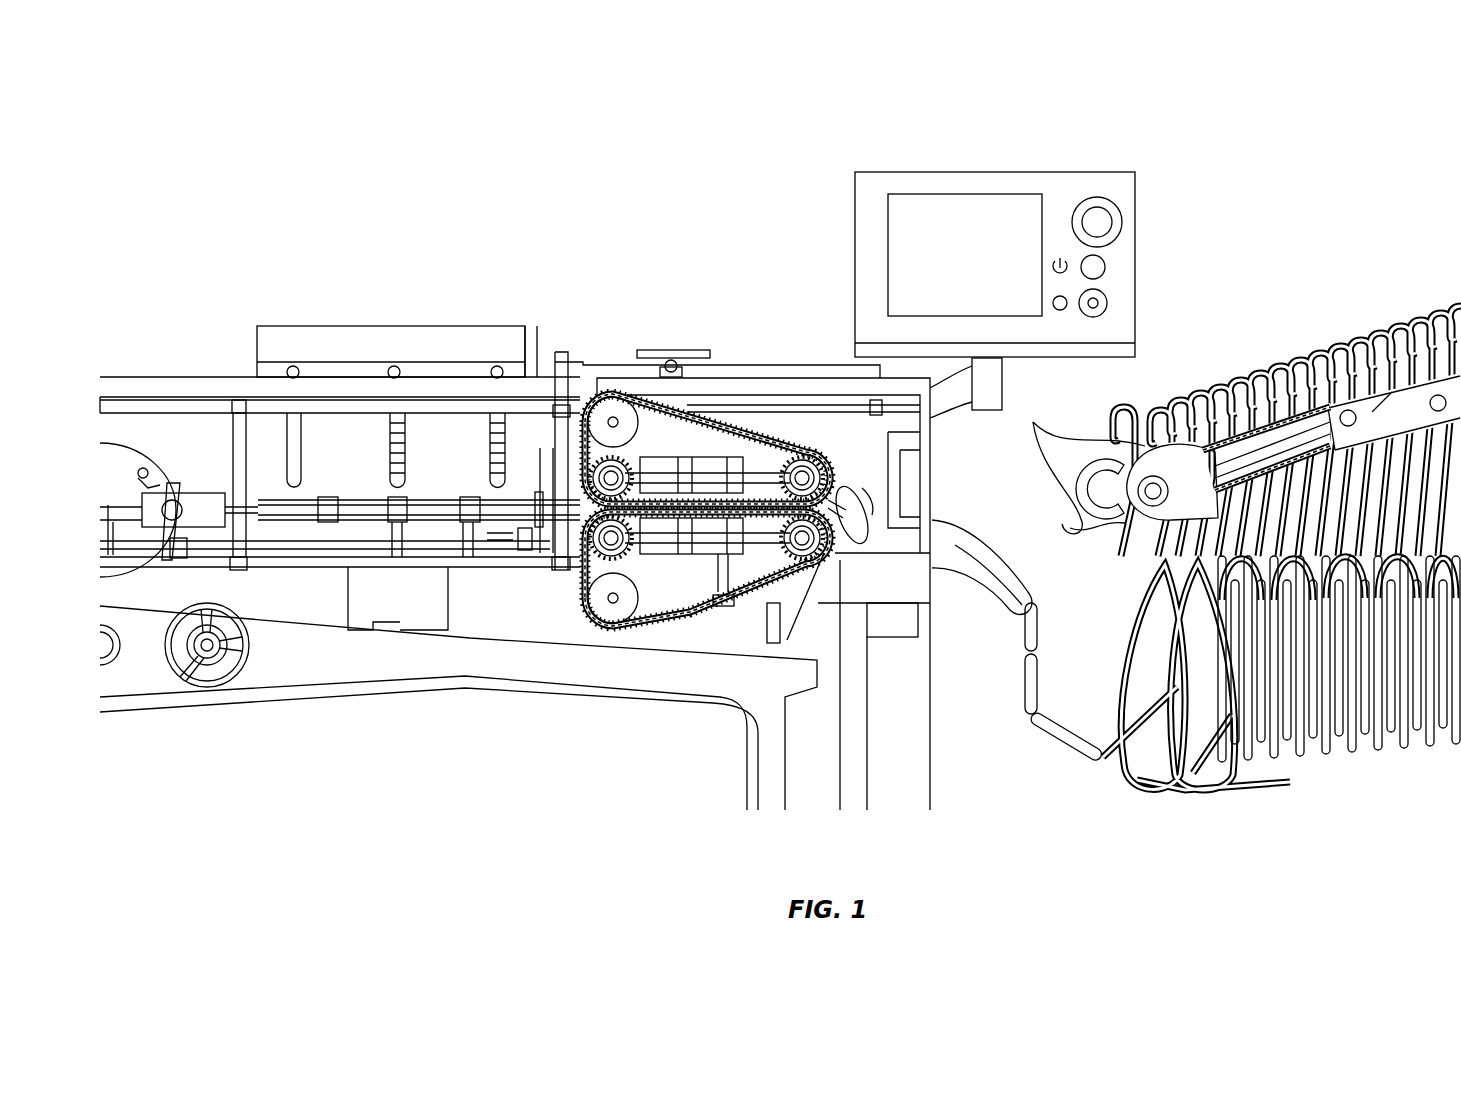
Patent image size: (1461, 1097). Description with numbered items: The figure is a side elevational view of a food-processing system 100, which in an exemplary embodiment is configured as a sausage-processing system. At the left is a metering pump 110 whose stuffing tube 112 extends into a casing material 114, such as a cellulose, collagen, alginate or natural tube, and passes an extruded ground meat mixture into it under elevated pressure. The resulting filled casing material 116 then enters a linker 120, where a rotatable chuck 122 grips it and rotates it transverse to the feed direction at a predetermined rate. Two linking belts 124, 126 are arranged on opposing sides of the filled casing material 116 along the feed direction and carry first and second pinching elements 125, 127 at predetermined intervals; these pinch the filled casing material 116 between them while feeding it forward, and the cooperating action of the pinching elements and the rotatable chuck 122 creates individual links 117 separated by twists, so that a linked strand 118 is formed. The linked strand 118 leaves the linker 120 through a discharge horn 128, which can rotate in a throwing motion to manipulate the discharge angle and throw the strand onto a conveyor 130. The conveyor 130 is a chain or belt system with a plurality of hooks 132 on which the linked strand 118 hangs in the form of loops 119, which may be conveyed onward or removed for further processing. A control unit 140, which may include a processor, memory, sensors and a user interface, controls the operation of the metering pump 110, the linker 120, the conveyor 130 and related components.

The food-processing system 100 is at (429, 162).
The metering pump 110 is at (133, 478).
The stuffing tube 112 is at (376, 515).
The casing material 114 is at (557, 405).
The filled casing material 116 is at (588, 560).
The individual links 117 is at (1100, 780).
The linked strand 118 is at (1025, 762).
The loops 119 is at (1367, 760).
The linker 120 is at (684, 272).
The rotatable chuck 122 is at (570, 500).
The linking belt 124 is at (745, 587).
The first pinching element 125 is at (695, 613).
The linking belt 126 is at (716, 420).
The second pinching element 127 is at (641, 396).
The discharge horn 128 is at (964, 568).
The conveyor 130 is at (1370, 408).
The hooks 132 is at (986, 388).
The control unit 140 is at (1056, 238).